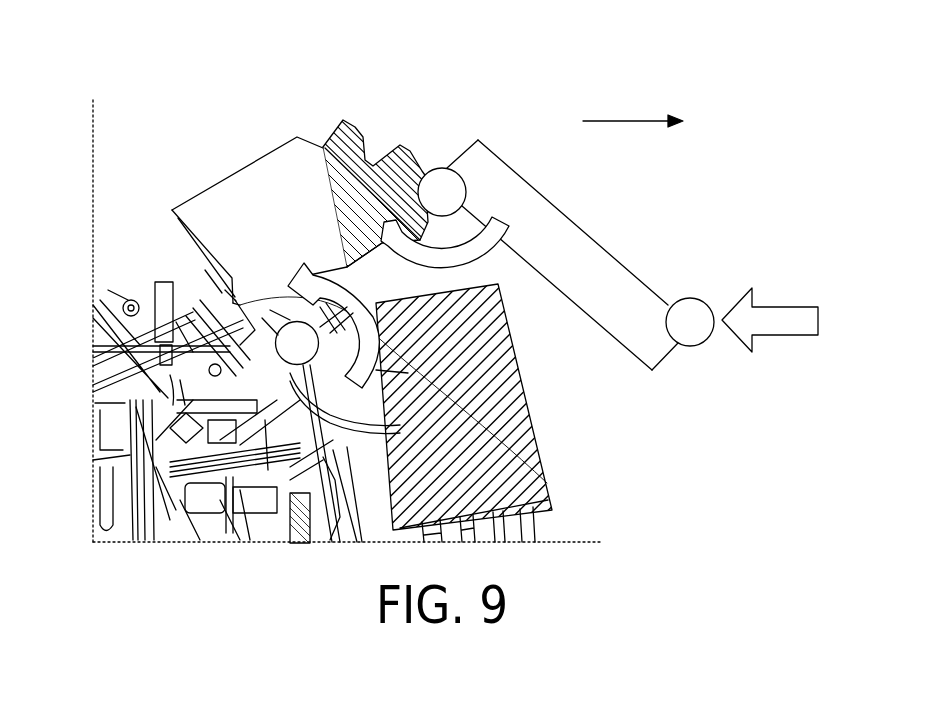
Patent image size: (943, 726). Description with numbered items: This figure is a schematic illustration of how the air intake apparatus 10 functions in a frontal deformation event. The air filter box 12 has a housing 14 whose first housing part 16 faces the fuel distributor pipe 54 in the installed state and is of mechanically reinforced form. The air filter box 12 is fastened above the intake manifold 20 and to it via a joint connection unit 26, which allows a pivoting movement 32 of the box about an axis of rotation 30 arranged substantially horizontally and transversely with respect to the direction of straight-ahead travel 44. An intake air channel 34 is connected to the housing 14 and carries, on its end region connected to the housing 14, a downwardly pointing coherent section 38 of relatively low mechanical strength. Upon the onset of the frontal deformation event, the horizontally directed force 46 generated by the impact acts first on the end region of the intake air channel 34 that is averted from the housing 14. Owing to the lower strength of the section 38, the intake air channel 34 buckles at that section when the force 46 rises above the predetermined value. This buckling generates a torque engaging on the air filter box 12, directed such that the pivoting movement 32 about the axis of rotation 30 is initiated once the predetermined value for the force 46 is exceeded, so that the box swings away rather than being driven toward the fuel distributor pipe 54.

The air intake apparatus 10 is at (714, 111).
The air filter box 12 is at (280, 113).
The housing 14 is at (208, 186).
The first housing part 16 is at (222, 293).
The intake manifold 20 is at (545, 413).
The joint connection unit 26 is at (553, 467).
The axis of rotation 30 is at (93, 462).
The pivoting movement 32 is at (236, 301).
The intake air channel 34 is at (577, 253).
The downwardly pointing coherent section 38 is at (442, 168).
The direction of straight-ahead travel 44 is at (632, 120).
The horizontally directed force 46 is at (780, 315).
The fuel distributor pipe 54 is at (95, 403).